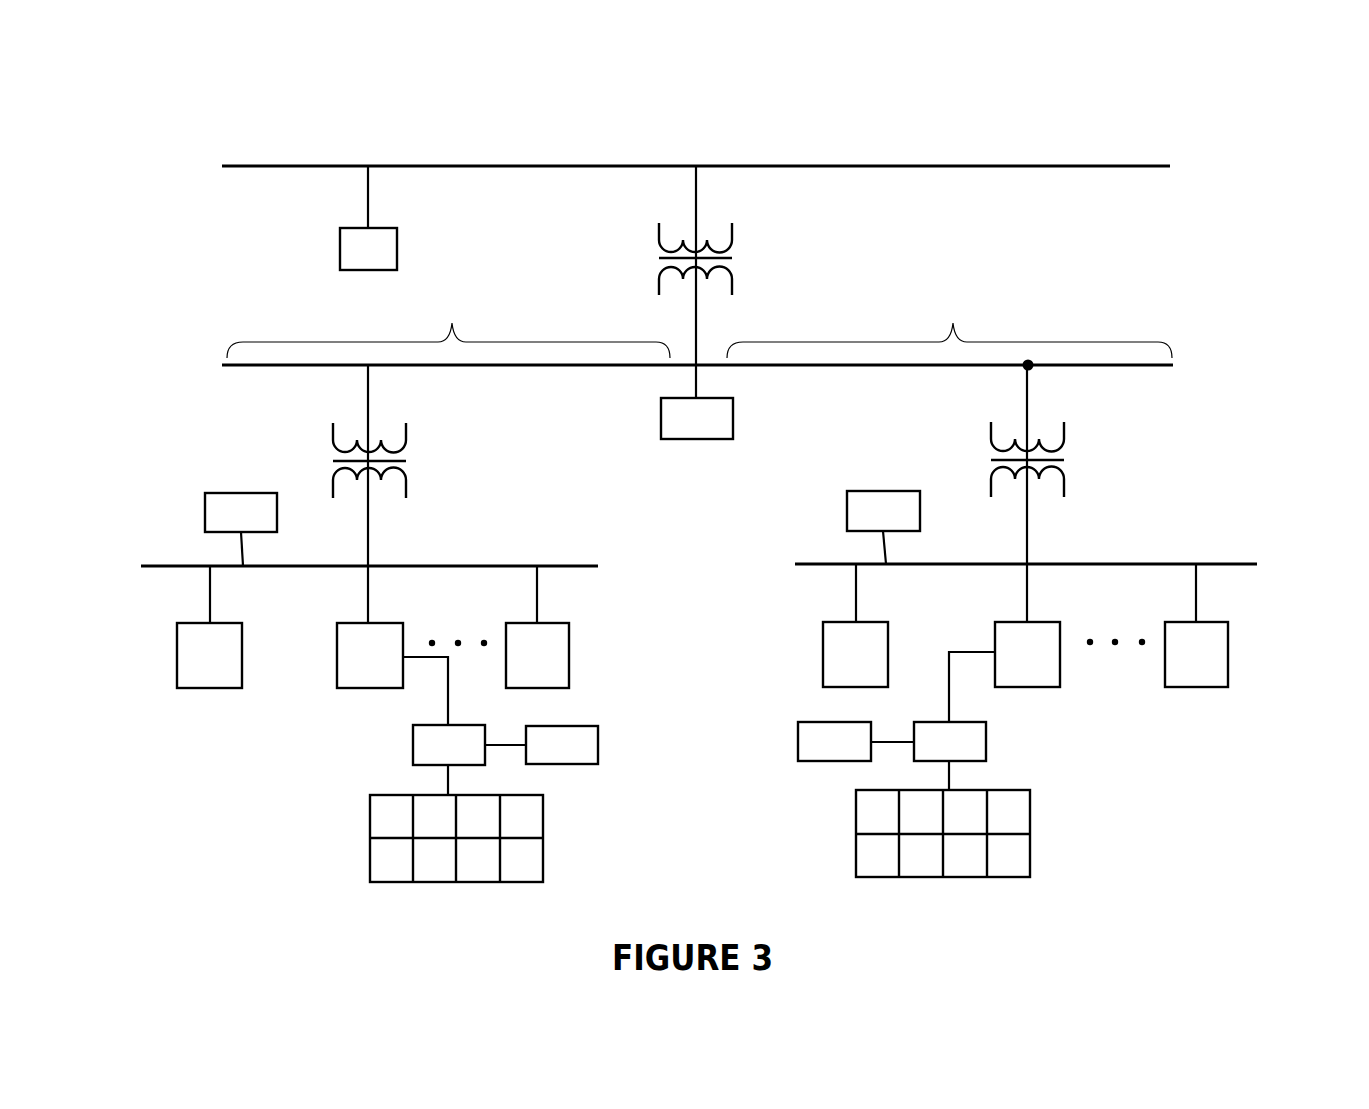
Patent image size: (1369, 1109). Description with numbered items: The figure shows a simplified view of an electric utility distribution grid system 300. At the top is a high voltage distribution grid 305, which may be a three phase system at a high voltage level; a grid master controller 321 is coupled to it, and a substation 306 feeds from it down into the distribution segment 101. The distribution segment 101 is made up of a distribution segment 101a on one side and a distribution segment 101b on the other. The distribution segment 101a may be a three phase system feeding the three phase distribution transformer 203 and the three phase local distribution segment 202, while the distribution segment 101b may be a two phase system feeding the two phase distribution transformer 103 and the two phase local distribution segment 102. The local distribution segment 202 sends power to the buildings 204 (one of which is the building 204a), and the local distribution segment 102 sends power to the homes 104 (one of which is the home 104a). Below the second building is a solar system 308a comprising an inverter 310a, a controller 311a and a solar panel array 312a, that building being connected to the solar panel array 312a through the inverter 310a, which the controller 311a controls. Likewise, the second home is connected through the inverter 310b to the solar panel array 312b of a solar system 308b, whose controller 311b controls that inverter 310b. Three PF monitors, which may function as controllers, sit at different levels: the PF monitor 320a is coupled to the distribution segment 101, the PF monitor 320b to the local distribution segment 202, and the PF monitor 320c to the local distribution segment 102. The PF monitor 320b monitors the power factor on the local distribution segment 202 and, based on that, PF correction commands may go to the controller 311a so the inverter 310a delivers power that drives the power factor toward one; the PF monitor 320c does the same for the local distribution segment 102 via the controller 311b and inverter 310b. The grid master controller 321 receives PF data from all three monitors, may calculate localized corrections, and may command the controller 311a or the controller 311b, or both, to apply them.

The system 300 is at (1223, 132).
The high voltage distribution grid 305 is at (1010, 165).
The grid master controller 321 is at (368, 218).
The substation 306 is at (753, 267).
The distribution segment 101 is at (1115, 366).
The distribution segment 101a is at (448, 328).
The distribution segment 101b is at (949, 328).
The PF monitor 320a is at (697, 418).
The three phase distribution transformer 203 is at (427, 452).
The two phase distribution transformer 103 is at (1085, 463).
The PF monitor 320b is at (241, 529).
The PF monitor 320c is at (883, 527).
The three phase local distribution segment 202 is at (472, 565).
The two phase local distribution segment 102 is at (1147, 563).
The buildings B1-Bn 204 is at (307, 728).
The building 204a is at (167, 615).
The homes H1-Hn 104 is at (1093, 725).
The home 104a is at (1238, 614).
The solar system 308a is at (482, 770).
The solar system 308b is at (921, 767).
The inverter 310a is at (449, 745).
The inverter 310b is at (950, 741).
The controller 311a is at (562, 745).
The controller 311b is at (834, 741).
The solar panel array 312a is at (370, 830).
The solar panel array 312b is at (1030, 827).